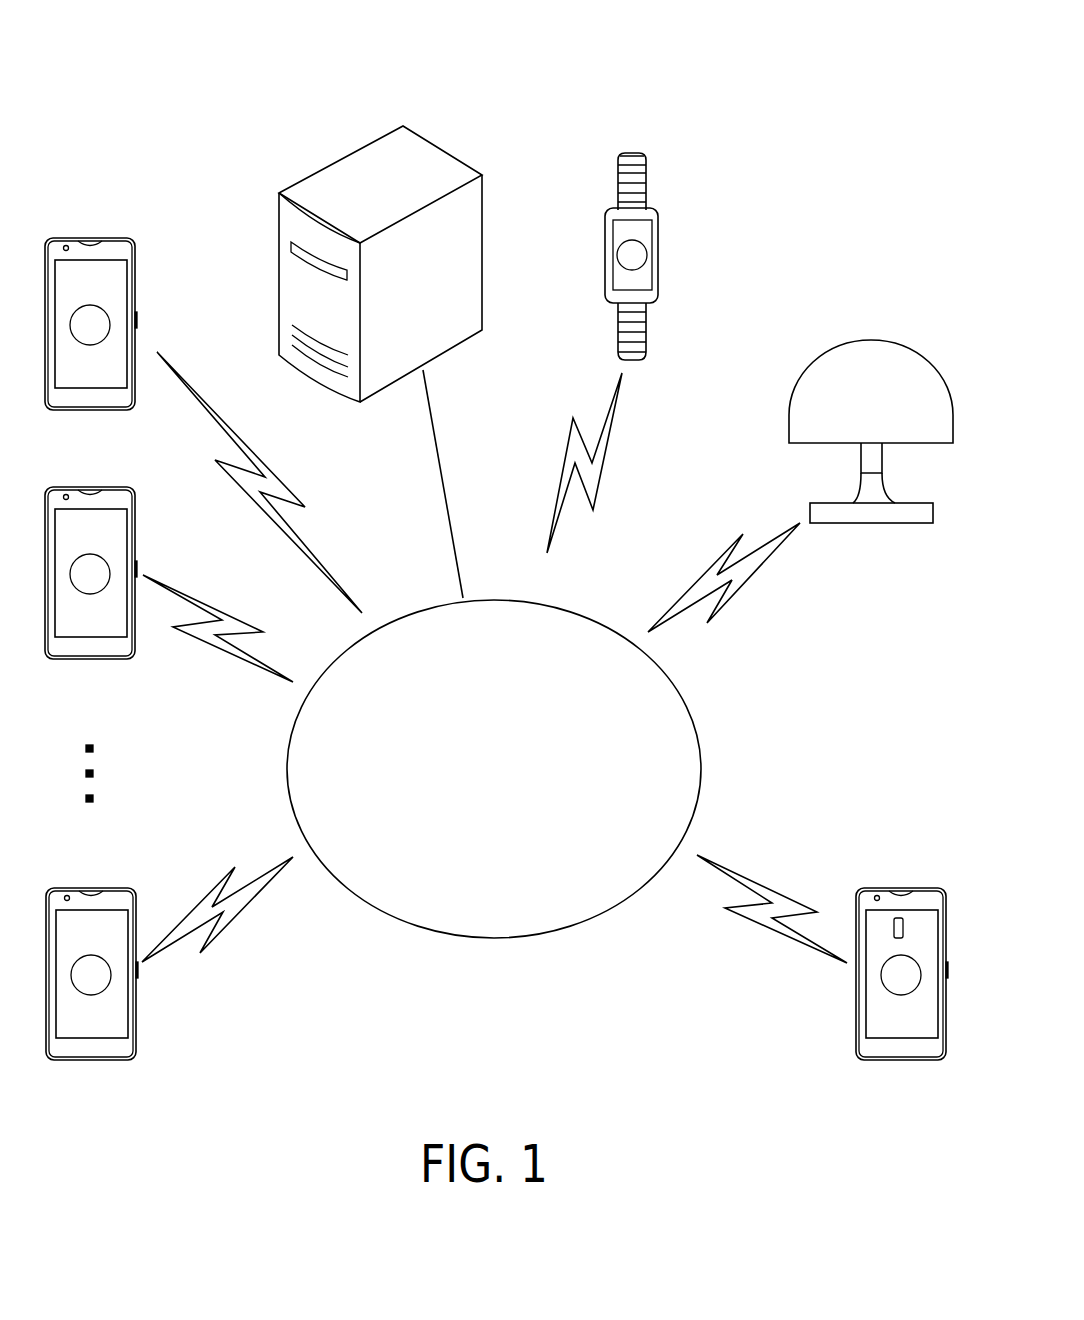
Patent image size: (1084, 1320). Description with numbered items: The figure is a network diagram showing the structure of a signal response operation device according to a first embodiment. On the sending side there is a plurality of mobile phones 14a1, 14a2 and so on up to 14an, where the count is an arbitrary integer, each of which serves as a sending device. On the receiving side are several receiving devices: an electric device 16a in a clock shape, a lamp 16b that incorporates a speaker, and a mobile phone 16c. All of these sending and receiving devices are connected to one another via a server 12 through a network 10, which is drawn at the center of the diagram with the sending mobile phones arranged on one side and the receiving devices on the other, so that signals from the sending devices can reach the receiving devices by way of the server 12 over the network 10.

The network 10 is at (700, 765).
The server 12 is at (417, 158).
The mobile phone 14a1 is at (101, 284).
The mobile phone 14a2 is at (102, 532).
The mobile phone 14an is at (102, 1012).
The electric device 16a is at (647, 233).
The lamp 16b is at (833, 391).
The mobile phone 16c is at (887, 1012).